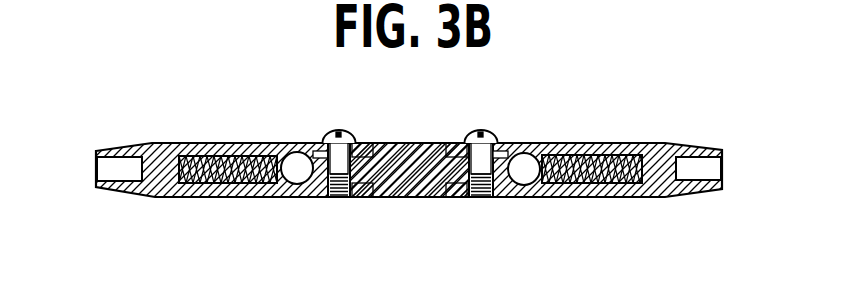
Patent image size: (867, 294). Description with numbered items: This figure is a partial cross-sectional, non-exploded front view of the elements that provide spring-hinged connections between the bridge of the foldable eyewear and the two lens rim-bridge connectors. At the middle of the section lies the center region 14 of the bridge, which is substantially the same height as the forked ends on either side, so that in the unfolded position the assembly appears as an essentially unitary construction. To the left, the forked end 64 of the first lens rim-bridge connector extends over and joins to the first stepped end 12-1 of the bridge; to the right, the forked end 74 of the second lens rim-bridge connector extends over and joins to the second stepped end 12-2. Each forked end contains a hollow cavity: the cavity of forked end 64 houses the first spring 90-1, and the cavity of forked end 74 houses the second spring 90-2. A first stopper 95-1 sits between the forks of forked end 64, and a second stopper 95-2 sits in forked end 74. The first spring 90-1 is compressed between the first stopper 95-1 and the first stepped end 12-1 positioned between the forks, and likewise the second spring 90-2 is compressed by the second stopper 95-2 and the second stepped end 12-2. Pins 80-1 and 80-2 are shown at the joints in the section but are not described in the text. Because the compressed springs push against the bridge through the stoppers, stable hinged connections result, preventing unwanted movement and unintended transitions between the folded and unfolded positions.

The forked end 64 is at (188, 198).
The first spring 90-1 is at (235, 198).
The second spring 90-2 is at (618, 142).
The first stopper 95-1 is at (298, 166).
The second stopper 95-2 is at (527, 173).
The first set screw 80-1 is at (352, 137).
The second set screw 80-2 is at (492, 138).
The first stepped end 12-1 is at (367, 168).
The second stepped end 12-2 is at (450, 168).
The center region 14 is at (429, 170).
The forked end 74 is at (610, 197).